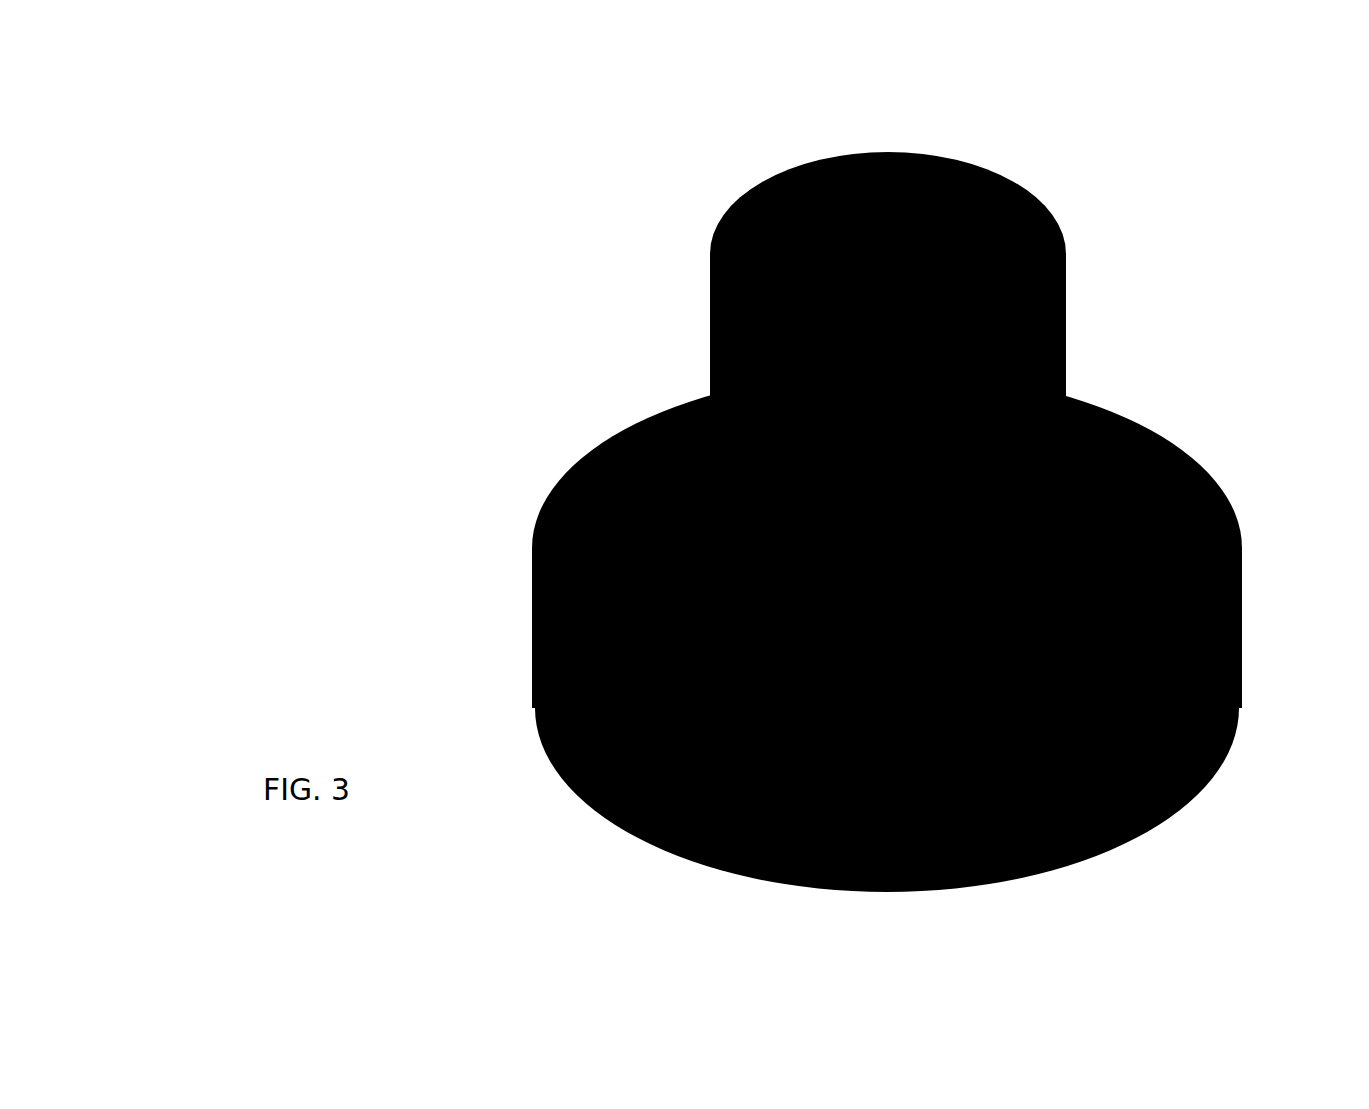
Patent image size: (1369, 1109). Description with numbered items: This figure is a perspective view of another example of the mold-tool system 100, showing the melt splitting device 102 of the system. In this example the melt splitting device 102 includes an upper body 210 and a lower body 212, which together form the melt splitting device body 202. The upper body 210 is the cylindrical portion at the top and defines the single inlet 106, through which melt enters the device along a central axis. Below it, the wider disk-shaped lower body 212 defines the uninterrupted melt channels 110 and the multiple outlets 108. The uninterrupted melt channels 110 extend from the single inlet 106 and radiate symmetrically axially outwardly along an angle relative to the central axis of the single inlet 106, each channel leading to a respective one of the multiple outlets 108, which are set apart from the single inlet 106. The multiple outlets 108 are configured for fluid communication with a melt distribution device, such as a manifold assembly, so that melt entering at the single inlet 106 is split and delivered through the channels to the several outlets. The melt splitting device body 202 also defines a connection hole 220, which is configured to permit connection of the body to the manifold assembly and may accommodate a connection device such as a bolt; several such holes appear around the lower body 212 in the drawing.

The mold-tool system 100 is at (156, 167).
The melt splitting device 102 is at (272, 275).
The melt splitting device body 202 is at (352, 573).
The upper body 210 is at (700, 318).
The lower body 212 is at (527, 692).
The single inlet 106 is at (930, 322).
The uninterrupted melt channels 110 is at (960, 603).
The multiple outlets 108 is at (807, 800).
The connection hole 220 is at (1143, 752).